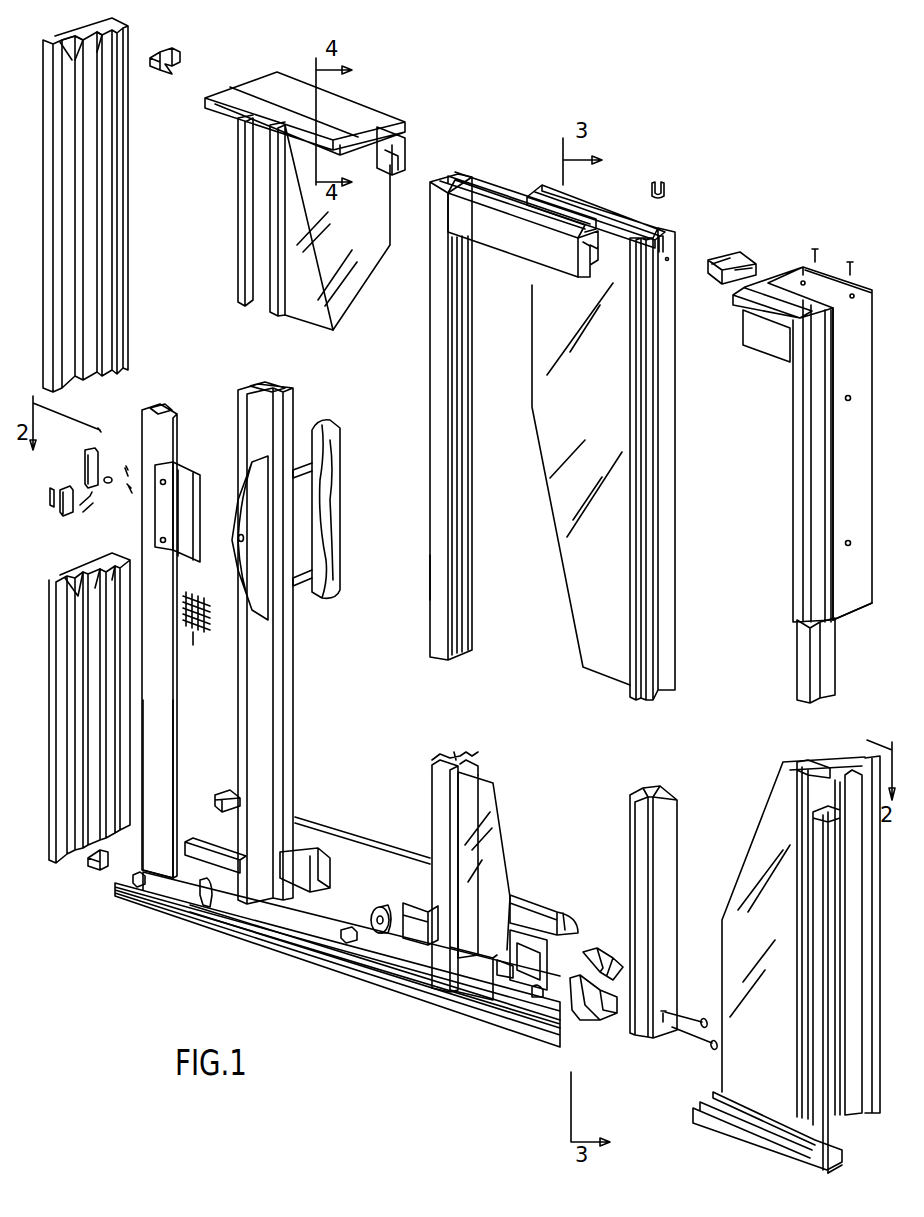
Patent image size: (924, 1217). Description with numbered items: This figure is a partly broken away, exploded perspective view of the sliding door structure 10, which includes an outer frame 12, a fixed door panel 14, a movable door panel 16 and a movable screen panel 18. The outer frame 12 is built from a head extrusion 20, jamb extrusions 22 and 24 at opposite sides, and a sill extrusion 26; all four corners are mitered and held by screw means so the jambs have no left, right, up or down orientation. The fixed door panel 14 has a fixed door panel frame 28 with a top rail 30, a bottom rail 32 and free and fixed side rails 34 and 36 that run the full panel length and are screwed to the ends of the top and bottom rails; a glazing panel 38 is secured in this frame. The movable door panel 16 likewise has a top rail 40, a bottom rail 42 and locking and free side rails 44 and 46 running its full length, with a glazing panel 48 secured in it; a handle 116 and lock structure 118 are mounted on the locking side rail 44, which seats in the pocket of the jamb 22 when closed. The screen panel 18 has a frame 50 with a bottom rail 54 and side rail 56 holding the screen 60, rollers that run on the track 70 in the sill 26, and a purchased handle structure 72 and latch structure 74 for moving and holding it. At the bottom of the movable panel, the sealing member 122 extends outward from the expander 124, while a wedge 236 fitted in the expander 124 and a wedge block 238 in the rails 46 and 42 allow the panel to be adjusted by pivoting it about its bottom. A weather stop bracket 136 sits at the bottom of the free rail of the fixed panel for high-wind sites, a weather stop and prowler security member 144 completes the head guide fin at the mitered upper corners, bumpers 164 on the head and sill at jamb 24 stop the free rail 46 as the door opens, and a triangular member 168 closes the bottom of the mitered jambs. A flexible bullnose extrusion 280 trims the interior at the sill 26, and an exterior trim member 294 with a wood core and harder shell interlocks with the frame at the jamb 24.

The sliding door structure 10 is at (688, 152).
The outer frame 12 is at (262, 78).
The fixed door panel 14 is at (503, 855).
The movable door panel 16 is at (238, 262).
The movable screen panel 18 is at (157, 406).
The head extrusion 20 is at (294, 184).
The jamb extrusion 22 is at (128, 215).
The jamb extrusion 24 is at (797, 467).
The sill extrusion 26 is at (252, 940).
The fixed door panel frame 28 is at (428, 370).
The top rail 30 is at (495, 190).
The bottom rail 32 is at (475, 990).
The free side rail 34 is at (430, 560).
The fixed side rail 36 is at (795, 656).
The glazing panel 38 is at (497, 814).
The top rail 40 is at (590, 197).
The bottom rail 42 is at (308, 853).
The locking side rail 44 is at (293, 674).
The free side rail 46 is at (675, 582).
The glazing panel 48 is at (560, 558).
The screen frame 50 is at (175, 902).
The bottom rail 54 is at (196, 906).
The side rail 56 is at (178, 758).
The screen 60 is at (201, 630).
The track 70 is at (295, 945).
The handle structure 72 is at (185, 470).
The latch structure 74 is at (85, 465).
The handle 116 is at (340, 470).
The lock structure 118 is at (238, 562).
The sealing member 122 is at (533, 997).
The movable door panel expander 124 is at (550, 927).
The weather stop bracket 136 is at (425, 975).
The weather stop and prowler security member 144 is at (163, 45).
The bumper 164 is at (725, 255).
The triangular member 168 is at (90, 878).
The wedge 236 is at (583, 1007).
The wedge block 238 is at (603, 960).
The bullnose extrusion 280 is at (305, 817).
The exterior trim member 294 is at (818, 845).